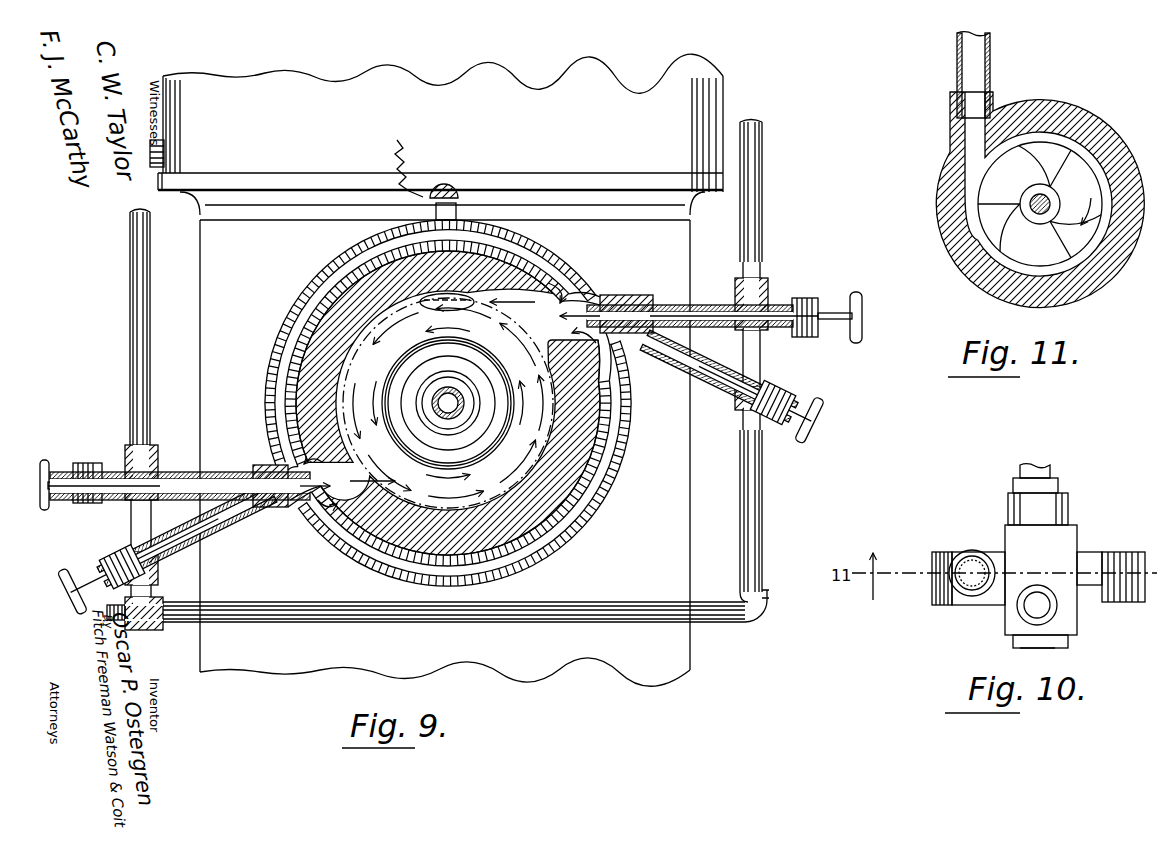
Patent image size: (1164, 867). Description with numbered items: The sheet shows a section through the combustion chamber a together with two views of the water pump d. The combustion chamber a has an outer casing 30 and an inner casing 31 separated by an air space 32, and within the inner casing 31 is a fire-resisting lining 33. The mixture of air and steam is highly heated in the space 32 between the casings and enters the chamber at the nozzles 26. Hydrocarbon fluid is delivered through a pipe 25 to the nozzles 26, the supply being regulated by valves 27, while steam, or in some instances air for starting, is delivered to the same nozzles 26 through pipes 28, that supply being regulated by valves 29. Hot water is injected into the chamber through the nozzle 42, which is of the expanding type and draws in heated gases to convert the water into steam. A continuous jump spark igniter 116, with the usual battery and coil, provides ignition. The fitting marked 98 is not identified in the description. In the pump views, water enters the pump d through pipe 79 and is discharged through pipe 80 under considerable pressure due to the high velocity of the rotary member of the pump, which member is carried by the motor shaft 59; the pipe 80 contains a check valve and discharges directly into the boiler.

In FIG. 9, the pipe 25 is at (714, 617).
In FIG. 9, the nozzles 26 is at (607, 312).
In FIG. 9, the valves 27 is at (757, 353).
In FIG. 9, the pipes 28 is at (763, 196).
In FIG. 9, the valves 29 is at (753, 312).
In FIG. 9, the outer casing 30 is at (562, 541).
In FIG. 9, the inner casing 31 is at (608, 469).
In FIG. 9, the air space 32 is at (590, 500).
In FIG. 9, the fire-resisting lining 33 is at (380, 541).
In FIG. 9, the nozzle 42 is at (455, 396).
In FIG. 9, the fitting 98 is at (152, 165).
In FIG. 9, the jump spark igniter 116 is at (450, 192).
In FIG. 11, the pipe 80 is at (983, 61).
In FIG. 10, the pipe 80 is at (971, 560).
In FIG. 11, the engine shaft 59 is at (1017, 217).
In FIG. 10, the pipe 79 is at (1030, 610).
In FIG. 9, the combustion chamber a is at (450, 395).
In FIG. 11, the combustion chamber a is at (1110, 164).
In FIG. 10, the water pump d is at (1100, 560).